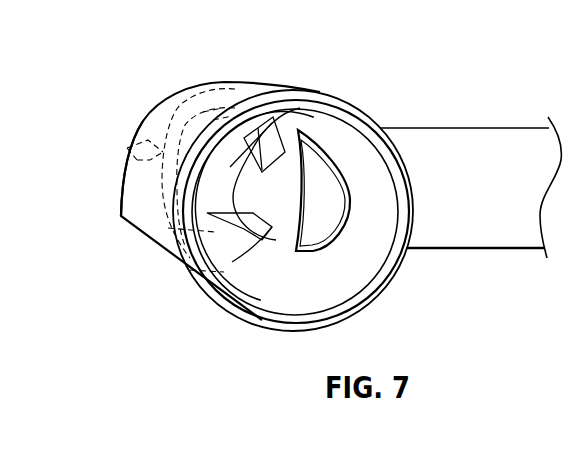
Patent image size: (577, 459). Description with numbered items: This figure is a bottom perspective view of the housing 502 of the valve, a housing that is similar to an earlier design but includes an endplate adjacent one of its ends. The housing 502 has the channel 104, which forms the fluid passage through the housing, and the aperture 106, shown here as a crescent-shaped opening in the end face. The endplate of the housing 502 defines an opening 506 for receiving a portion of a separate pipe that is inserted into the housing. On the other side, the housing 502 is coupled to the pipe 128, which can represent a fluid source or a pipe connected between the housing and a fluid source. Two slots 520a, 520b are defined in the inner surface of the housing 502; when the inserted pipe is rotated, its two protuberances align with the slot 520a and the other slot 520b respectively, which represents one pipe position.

The housing 502 is at (362, 48).
The opening 506 is at (265, 170).
The aperture 106 is at (328, 181).
The pipe 128 is at (499, 128).
The channel 104 is at (343, 281).
The slot 520a is at (139, 186).
The slot 520b is at (277, 183).